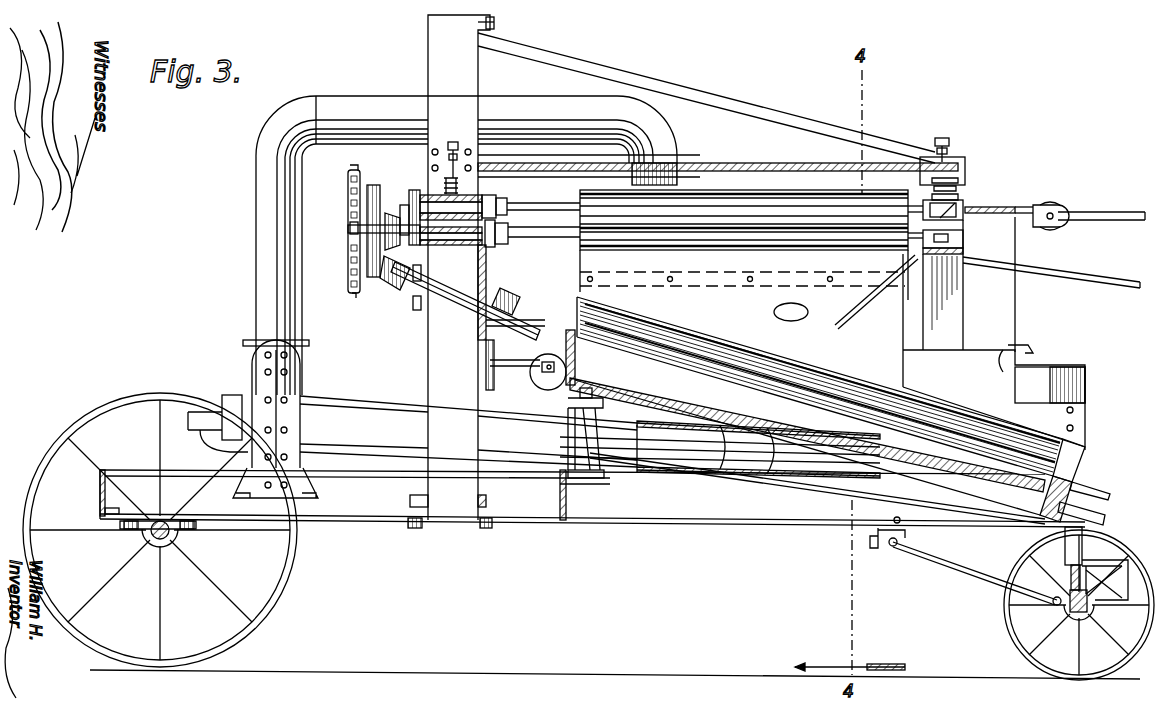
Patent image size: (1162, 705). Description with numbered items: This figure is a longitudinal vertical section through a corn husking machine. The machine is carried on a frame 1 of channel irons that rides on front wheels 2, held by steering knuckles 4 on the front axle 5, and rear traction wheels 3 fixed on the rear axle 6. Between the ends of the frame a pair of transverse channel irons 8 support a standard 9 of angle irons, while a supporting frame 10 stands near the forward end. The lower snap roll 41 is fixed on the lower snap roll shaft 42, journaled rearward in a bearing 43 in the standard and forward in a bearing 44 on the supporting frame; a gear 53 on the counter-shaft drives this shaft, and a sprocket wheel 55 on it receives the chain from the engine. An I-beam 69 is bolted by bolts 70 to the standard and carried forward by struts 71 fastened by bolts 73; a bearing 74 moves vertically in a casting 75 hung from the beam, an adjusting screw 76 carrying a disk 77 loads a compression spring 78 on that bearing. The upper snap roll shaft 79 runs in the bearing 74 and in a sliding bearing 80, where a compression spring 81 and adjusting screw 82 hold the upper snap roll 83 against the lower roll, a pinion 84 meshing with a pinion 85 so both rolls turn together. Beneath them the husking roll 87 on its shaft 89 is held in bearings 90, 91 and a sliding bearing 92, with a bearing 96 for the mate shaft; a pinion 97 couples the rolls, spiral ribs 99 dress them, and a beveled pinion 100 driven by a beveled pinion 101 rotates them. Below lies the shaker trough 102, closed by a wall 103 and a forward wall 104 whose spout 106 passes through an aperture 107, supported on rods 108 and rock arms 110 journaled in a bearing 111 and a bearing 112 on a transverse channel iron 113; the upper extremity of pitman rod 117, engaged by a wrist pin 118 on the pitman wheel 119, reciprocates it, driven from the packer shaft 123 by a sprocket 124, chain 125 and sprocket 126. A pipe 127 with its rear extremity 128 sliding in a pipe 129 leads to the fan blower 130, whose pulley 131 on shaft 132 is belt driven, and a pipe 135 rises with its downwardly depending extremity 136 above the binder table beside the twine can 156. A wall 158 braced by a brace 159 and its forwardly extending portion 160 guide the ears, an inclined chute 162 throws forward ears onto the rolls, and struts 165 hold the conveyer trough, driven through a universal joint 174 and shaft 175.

The frame 1 is at (104, 494).
The front wheels 2 is at (1020, 652).
The rear traction wheels 3 is at (292, 574).
The steering knuckles 4 is at (1100, 580).
The front axle 5 is at (1072, 615).
The rear axle 6 is at (156, 540).
The transverse channel irons 8 is at (414, 528).
The standard 9 is at (450, 267).
The supporting frame 10 is at (945, 318).
The lower snap roll 41 is at (696, 242).
The lower snap roll shaft 42 is at (565, 236).
The bearing 43 is at (465, 240).
The bearing 44 is at (963, 238).
The gear 53 is at (356, 295).
The sprocket wheel 55 is at (348, 190).
The I-beam 69 is at (718, 151).
The bolts 70 is at (470, 150).
The struts 71 is at (705, 92).
The bolts 73 is at (496, 23).
The bearing 74 is at (1005, 200).
The casting 75 is at (962, 208).
The adjusting screw 76 is at (950, 140).
The disk 77 is at (960, 185).
The compression spring 78 is at (955, 210).
The upper snap roll shaft 79 is at (560, 203).
The sliding bearing 80 is at (482, 200).
The compression spring 81 is at (444, 184).
The adjusting screw 82 is at (453, 142).
The upper snap roll 83 is at (790, 192).
The pinion 84 is at (414, 226).
The pinion 85 is at (408, 208).
The husking roll 87 is at (900, 415).
The shaft 89 is at (516, 308).
The bearing 90 is at (476, 312).
The bearing 91 is at (398, 270).
The bearing 92 is at (1075, 460).
The bearing 96 is at (478, 316).
The pinion 97 is at (508, 312).
The spiral ribs 99 is at (795, 395).
The beveled pinion 100 is at (385, 280).
The beveled pinion 101 is at (367, 250).
The shaker trough 102 is at (807, 432).
The wall 103 is at (576, 358).
The forward wall 104 is at (1050, 482).
The spout 106 is at (1098, 516).
The aperture 107 is at (1092, 494).
The rods 108 is at (1090, 488).
The rock arms 110 is at (600, 415).
The bearing 111 is at (594, 390).
The bearing 112 is at (598, 480).
The transverse channel iron 113 is at (560, 512).
The upper extremity of pitman rod 117 is at (540, 378).
The wrist pin 118 is at (558, 384).
The pitman wheel 119 is at (532, 370).
The packer shaft 123 is at (522, 366).
The sprocket 124 is at (486, 382).
The chain 125 is at (486, 346).
The sprocket 126 is at (500, 242).
The pipe 127 is at (830, 480).
The rear extremity of pipe 128 is at (672, 460).
The pipe 129 is at (370, 402).
The fan blower 130 is at (292, 372).
The pulley 131 is at (222, 397).
The shaft 132 is at (248, 372).
The pipe 135 is at (256, 270).
The downwardly depending extremity 136 is at (665, 175).
The twine can 156 is at (1052, 378).
The wall 158 is at (720, 303).
The brace 159 is at (805, 290).
The forwardly extending portion 160 is at (958, 384).
The inclined chute 162 is at (855, 312).
The struts 165 is at (1093, 278).
The universal joint 174 is at (1048, 204).
The shaft 175 is at (1102, 211).